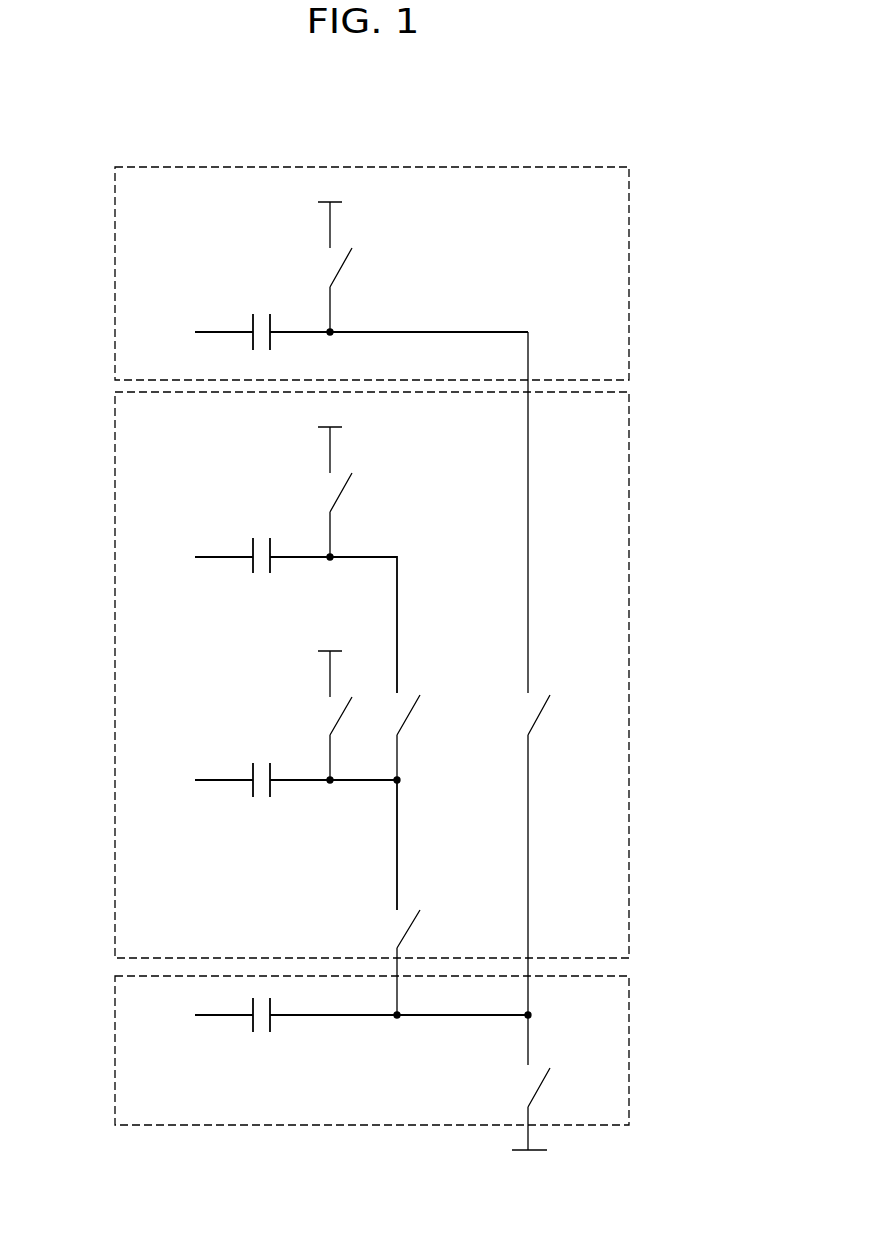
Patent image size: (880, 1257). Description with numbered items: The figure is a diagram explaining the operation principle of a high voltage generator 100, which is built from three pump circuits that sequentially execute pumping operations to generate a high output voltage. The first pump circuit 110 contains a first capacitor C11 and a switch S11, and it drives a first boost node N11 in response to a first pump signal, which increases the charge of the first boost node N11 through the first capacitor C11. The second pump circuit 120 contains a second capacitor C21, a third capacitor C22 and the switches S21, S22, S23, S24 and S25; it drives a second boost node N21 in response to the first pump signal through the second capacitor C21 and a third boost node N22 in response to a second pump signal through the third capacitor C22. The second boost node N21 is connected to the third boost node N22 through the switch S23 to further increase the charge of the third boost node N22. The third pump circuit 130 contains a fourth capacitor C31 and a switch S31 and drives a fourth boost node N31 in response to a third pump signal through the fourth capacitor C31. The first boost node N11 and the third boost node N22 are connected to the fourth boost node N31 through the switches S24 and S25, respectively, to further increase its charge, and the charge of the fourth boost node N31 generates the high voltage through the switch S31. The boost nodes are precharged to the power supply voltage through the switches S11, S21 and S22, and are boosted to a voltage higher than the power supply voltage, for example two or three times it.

The high voltage generator 100 is at (633, 138).
The first pump circuit 110 is at (117, 288).
The second pump circuit 120 is at (117, 579).
The third pump circuit 130 is at (117, 1045).
The switch S11 is at (315, 290).
The switch S21 is at (315, 515).
The switch S22 is at (318, 738).
The switch S23 is at (432, 737).
The switch S24 is at (563, 698).
The switch S25 is at (432, 962).
The switch S31 is at (560, 1109).
The first capacitor C11 is at (262, 345).
The second capacitor C21 is at (262, 570).
The third capacitor C22 is at (262, 795).
The fourth capacitor C31 is at (296, 1030).
The first boost node N11 is at (427, 319).
The second boost node N21 is at (365, 610).
The third boost node N22 is at (389, 839).
The fourth boost node N31 is at (490, 1015).